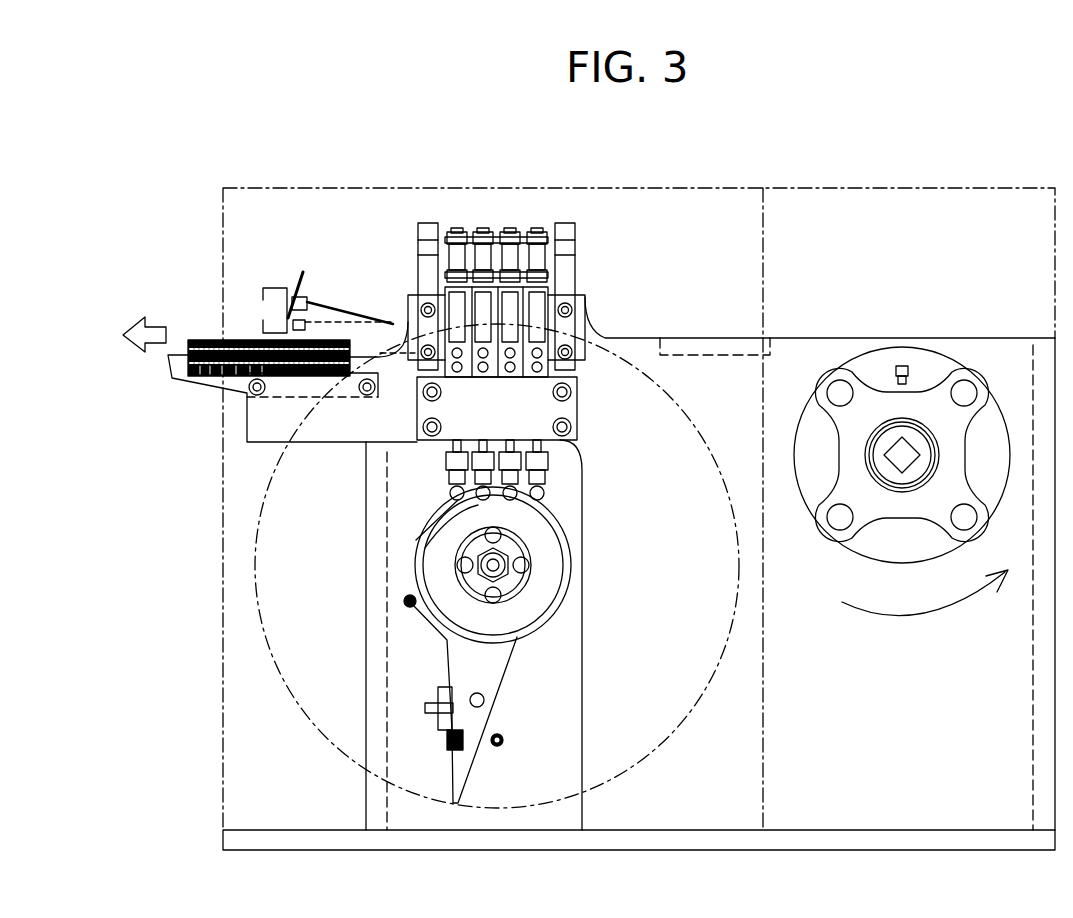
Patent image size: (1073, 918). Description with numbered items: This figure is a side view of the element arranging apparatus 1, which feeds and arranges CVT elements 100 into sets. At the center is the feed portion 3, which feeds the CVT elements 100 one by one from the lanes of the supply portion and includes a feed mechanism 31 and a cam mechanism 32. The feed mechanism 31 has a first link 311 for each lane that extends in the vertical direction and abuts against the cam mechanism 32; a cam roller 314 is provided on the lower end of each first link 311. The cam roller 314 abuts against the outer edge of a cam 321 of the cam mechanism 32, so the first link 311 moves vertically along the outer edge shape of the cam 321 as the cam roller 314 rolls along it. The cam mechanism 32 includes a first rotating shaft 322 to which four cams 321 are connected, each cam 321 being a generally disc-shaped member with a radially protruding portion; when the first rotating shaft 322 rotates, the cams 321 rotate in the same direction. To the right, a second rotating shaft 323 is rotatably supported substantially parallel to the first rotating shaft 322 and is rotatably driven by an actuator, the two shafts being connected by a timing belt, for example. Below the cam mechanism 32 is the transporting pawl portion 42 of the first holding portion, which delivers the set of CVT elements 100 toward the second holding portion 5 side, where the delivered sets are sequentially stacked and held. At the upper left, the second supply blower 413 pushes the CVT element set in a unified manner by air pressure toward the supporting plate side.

The element arranging apparatus 1 is at (270, 172).
The CVT element 100 is at (202, 340).
The second holding portion 5 is at (297, 368).
The second supply blower 413 is at (275, 290).
The feed portion 3 is at (490, 228).
The feed mechanism 31 is at (530, 228).
The first link 311 is at (580, 408).
The cam roller 314 is at (452, 492).
The cam mechanism 32 is at (455, 565).
The cam 321 is at (557, 607).
The first rotating shaft 322 is at (495, 565).
The transporting pawl portion 42 is at (440, 693).
The second rotating shaft 323 is at (903, 448).